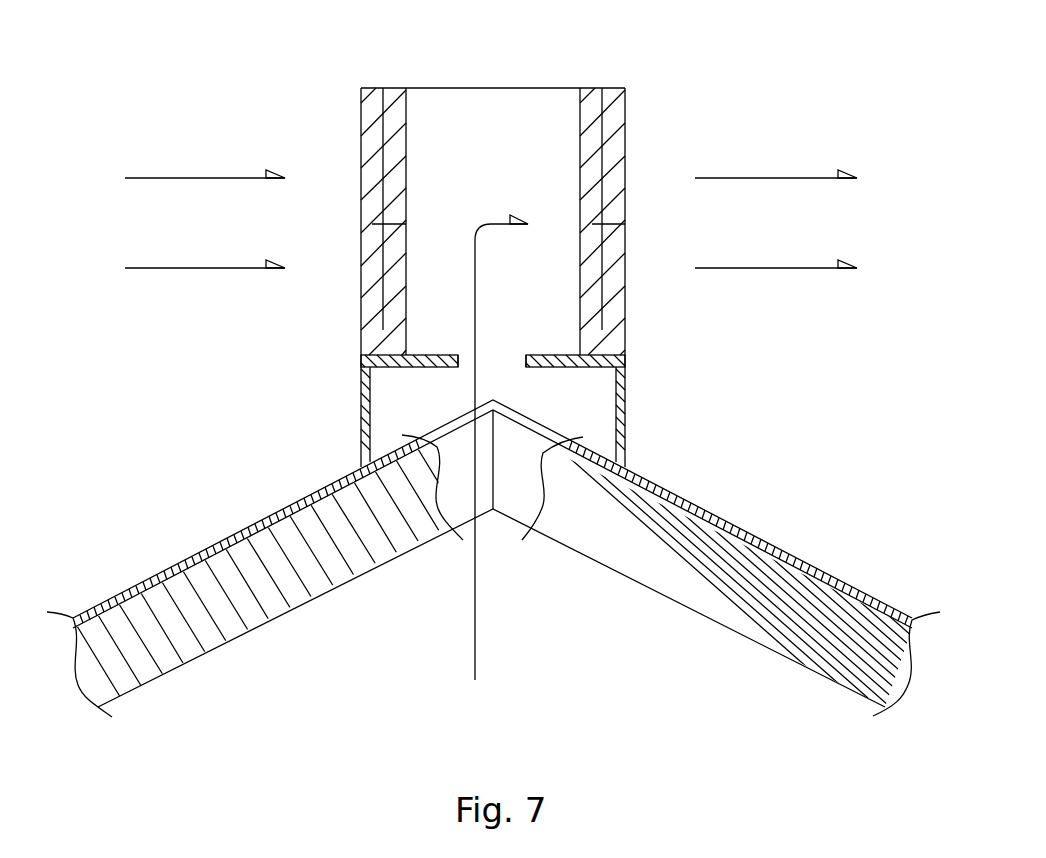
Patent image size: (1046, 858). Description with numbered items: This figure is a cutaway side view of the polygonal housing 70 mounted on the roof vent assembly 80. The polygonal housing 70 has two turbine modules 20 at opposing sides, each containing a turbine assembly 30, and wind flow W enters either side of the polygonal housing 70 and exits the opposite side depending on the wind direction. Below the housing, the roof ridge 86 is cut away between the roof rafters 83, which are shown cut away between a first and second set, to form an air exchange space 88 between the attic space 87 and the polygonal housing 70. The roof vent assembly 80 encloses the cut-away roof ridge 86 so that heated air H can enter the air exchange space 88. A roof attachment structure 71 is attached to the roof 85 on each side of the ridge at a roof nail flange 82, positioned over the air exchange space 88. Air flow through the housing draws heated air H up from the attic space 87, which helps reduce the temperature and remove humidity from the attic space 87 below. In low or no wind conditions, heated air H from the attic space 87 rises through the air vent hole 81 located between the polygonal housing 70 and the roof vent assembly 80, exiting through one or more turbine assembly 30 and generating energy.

The polygonal housing 70 is at (487, 73).
The turbine module 20 is at (365, 97).
The turbine assembly 30 is at (365, 155).
The air vent hole 81 is at (503, 365).
The air exchange space 88 is at (410, 400).
The roof attachment structure 71 is at (361, 415).
The roof vent assembly 80 is at (646, 424).
The roof ridge 86 is at (520, 410).
The attic space 87 is at (305, 560).
The roof nail flange 82 is at (638, 470).
The roof 85 is at (750, 532).
The roof rafters 83 is at (535, 452).
The heated air H is at (497, 460).
The wind flow W is at (472, 215).